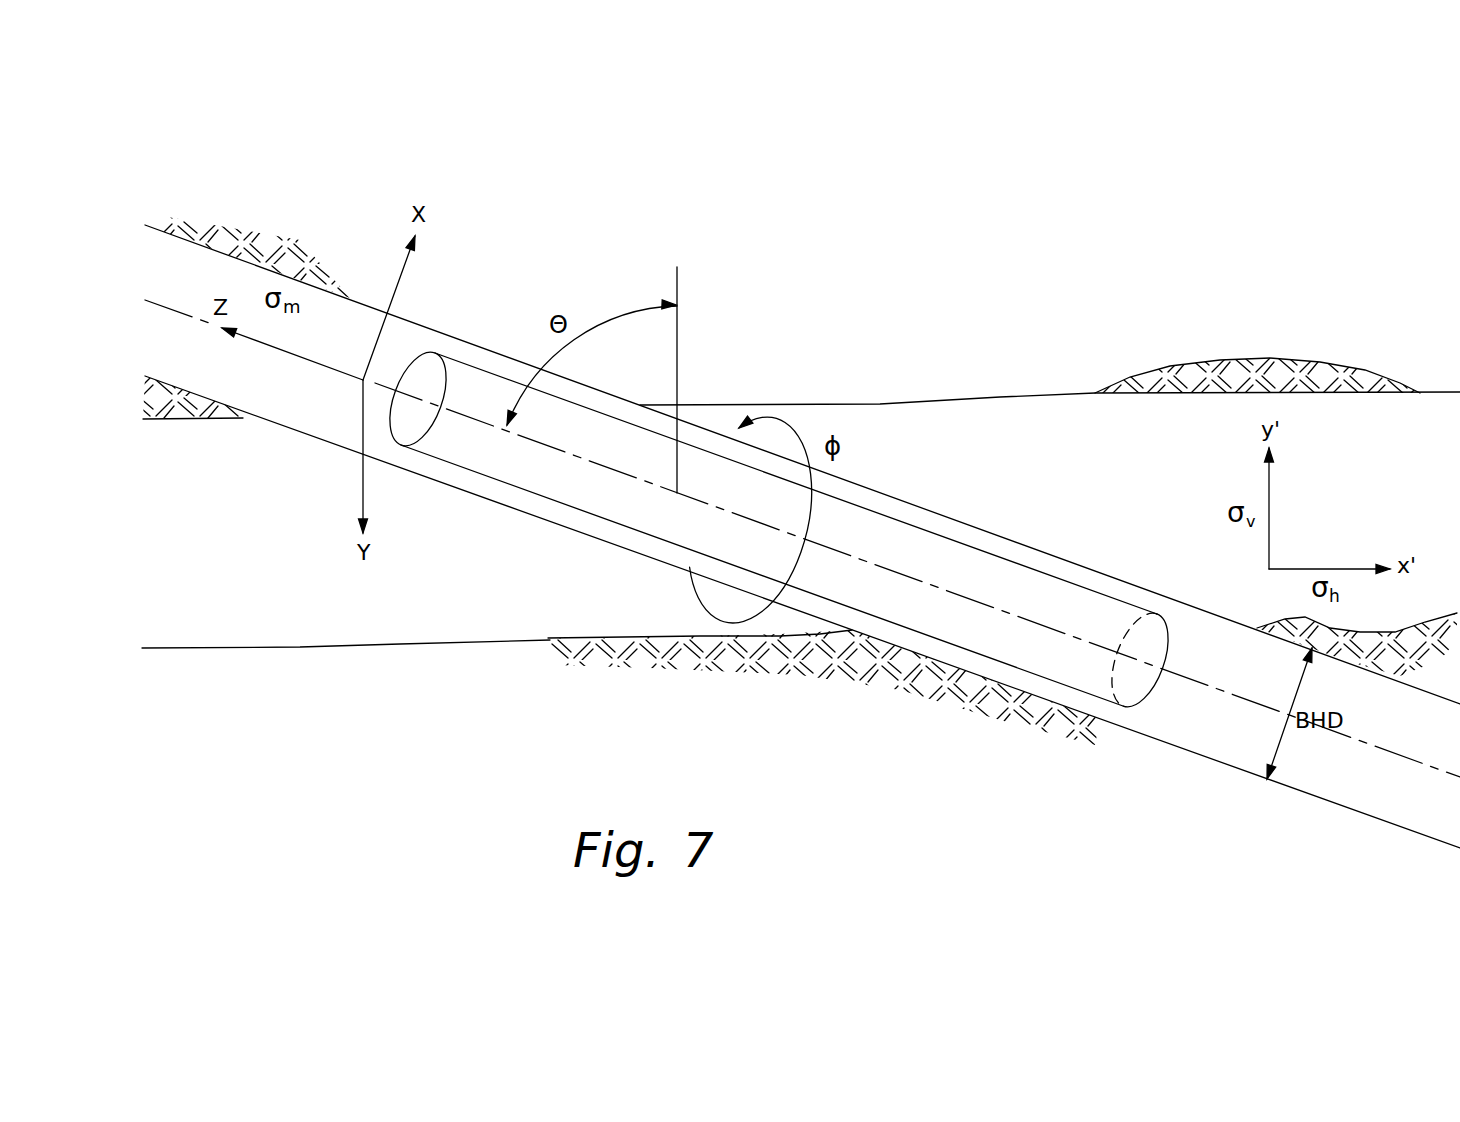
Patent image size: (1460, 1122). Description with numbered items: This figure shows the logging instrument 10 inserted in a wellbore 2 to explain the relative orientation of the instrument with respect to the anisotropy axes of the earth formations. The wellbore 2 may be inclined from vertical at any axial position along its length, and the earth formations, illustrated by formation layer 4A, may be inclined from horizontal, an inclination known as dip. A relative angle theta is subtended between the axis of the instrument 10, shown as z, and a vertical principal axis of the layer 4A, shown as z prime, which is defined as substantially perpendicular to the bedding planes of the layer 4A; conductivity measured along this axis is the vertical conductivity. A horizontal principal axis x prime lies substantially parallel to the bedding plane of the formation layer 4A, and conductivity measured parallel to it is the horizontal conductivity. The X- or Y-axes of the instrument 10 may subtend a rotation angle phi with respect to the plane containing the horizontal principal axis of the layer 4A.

The wellbore 2 is at (1190, 738).
The logging instrument 10 is at (646, 558).
The formation layer 4A is at (253, 632).